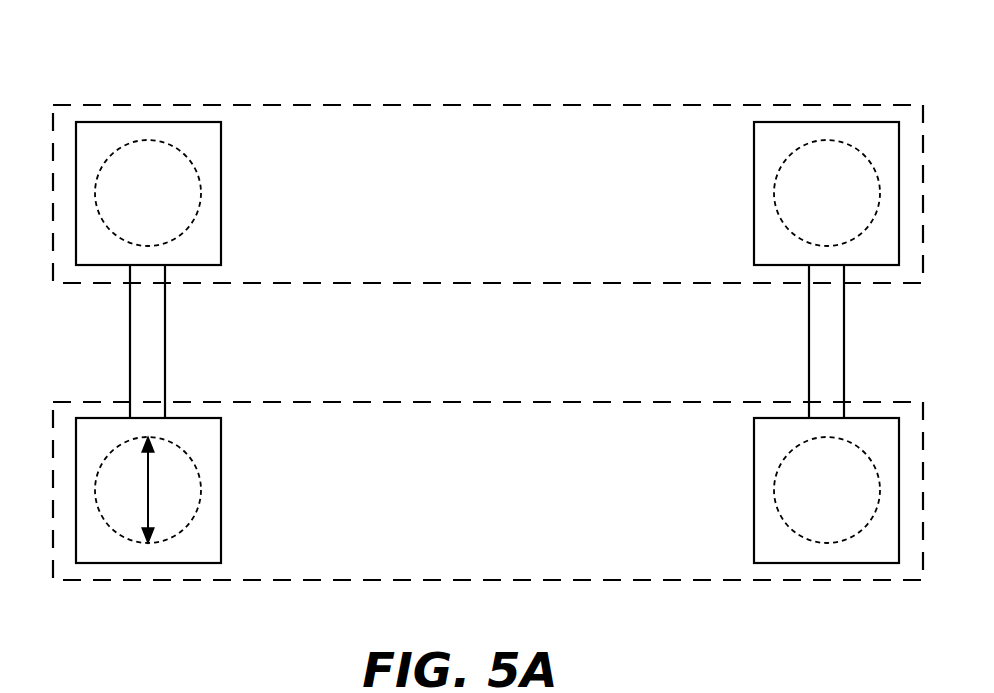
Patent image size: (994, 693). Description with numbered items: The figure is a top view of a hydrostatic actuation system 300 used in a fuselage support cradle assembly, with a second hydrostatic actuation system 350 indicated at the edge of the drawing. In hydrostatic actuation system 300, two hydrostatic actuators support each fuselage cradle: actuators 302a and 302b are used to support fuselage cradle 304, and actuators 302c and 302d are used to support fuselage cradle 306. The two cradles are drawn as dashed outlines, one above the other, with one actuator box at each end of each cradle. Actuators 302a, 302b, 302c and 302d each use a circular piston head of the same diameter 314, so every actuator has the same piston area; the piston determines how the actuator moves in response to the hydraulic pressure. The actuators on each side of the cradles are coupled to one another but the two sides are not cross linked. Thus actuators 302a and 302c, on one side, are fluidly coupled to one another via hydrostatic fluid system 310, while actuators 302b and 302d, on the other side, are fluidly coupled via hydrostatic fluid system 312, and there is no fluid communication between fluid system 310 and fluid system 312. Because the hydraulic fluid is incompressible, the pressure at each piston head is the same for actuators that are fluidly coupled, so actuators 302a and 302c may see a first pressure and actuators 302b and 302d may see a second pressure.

The hydrostatic actuation system 300 is at (150, 90).
The actuator 302a is at (148, 193).
The actuator 302b is at (826, 193).
The actuator 302c is at (157, 557).
The actuator 302d is at (826, 490).
The fuselage cradle 304 is at (488, 194).
The fuselage cradle 306 is at (488, 491).
The hydrostatic fluid system 310 is at (148, 345).
The hydrostatic fluid system 312 is at (826, 342).
The diameter 314 is at (148, 488).
The hydrostatic actuation system 350 is at (118, 692).